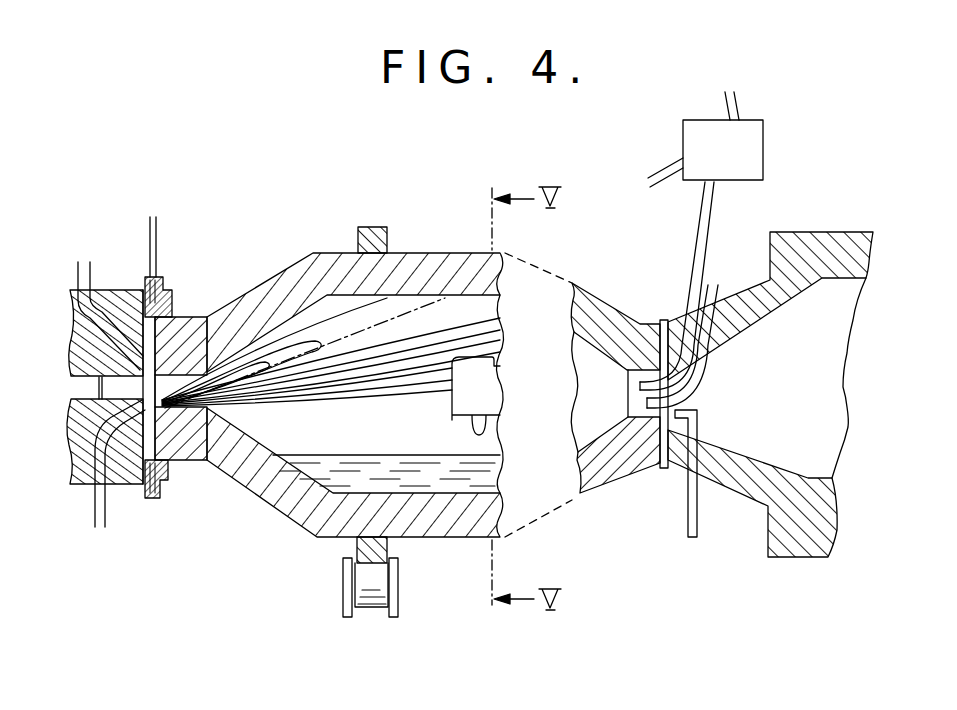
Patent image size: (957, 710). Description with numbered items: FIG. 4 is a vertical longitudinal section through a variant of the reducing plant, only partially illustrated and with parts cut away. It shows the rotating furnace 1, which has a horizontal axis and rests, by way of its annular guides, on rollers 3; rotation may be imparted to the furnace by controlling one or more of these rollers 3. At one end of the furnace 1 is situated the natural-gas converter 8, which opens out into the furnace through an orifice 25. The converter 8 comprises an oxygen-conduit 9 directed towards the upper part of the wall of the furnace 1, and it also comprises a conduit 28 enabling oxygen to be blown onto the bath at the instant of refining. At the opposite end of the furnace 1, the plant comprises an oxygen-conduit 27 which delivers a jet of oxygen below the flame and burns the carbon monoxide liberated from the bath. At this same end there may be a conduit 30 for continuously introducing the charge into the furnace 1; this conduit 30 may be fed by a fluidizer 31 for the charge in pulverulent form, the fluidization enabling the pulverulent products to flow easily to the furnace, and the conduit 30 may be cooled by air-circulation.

The rotating furnace 1 is at (315, 538).
The rollers 3 is at (372, 607).
The natural-gas converter 8 is at (70, 318).
The oxygen-conduit 9 is at (93, 513).
The orifice 25 is at (117, 389).
The oxygen-conduit 27 is at (705, 378).
The conduit 28 is at (92, 278).
The conduit 30 is at (697, 245).
The fluidizer 31 is at (710, 142).